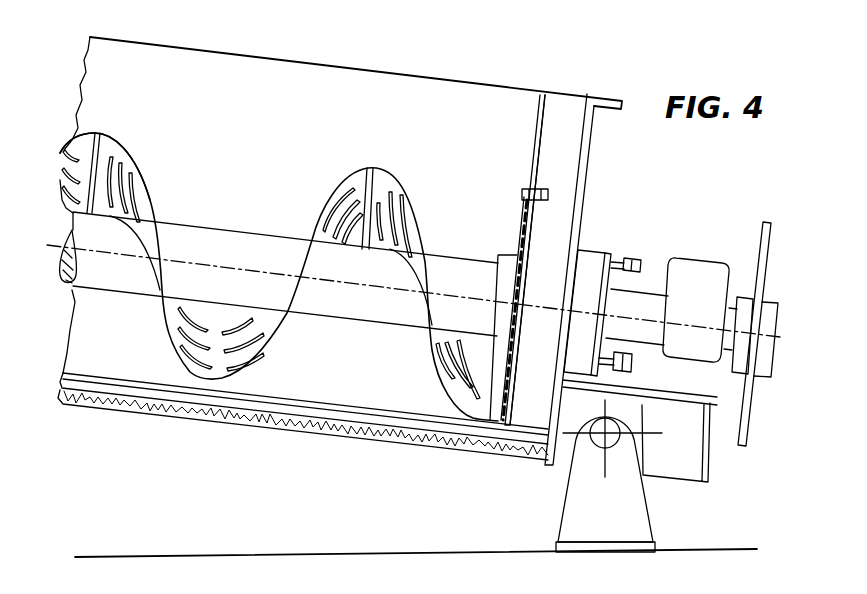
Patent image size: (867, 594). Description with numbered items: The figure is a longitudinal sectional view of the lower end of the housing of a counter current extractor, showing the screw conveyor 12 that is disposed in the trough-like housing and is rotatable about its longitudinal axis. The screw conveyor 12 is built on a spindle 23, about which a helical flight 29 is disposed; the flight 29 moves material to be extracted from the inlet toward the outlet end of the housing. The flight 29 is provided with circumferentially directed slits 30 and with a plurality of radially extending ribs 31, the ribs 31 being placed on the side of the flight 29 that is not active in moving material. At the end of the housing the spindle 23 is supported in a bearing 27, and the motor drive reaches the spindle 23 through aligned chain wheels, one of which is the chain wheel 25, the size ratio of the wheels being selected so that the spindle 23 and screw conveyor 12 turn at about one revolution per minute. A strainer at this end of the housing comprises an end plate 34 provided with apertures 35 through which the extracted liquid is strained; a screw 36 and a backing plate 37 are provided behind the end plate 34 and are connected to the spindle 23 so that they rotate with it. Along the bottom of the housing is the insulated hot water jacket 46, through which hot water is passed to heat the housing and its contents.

The screw conveyor 12 is at (152, 178).
The spindle 23 is at (647, 303).
The chain wheel 25 is at (743, 440).
The bearing 27 is at (697, 265).
The helical flight 29 is at (128, 170).
The circumferential directed slits 30 is at (72, 152).
The radially extending ribs 31 is at (105, 137).
The end plate 34 is at (530, 145).
The apertures 35 is at (527, 243).
The screw 36 is at (535, 197).
The backing plate 37 is at (545, 213).
The insulated hot water jacket 46 is at (355, 415).